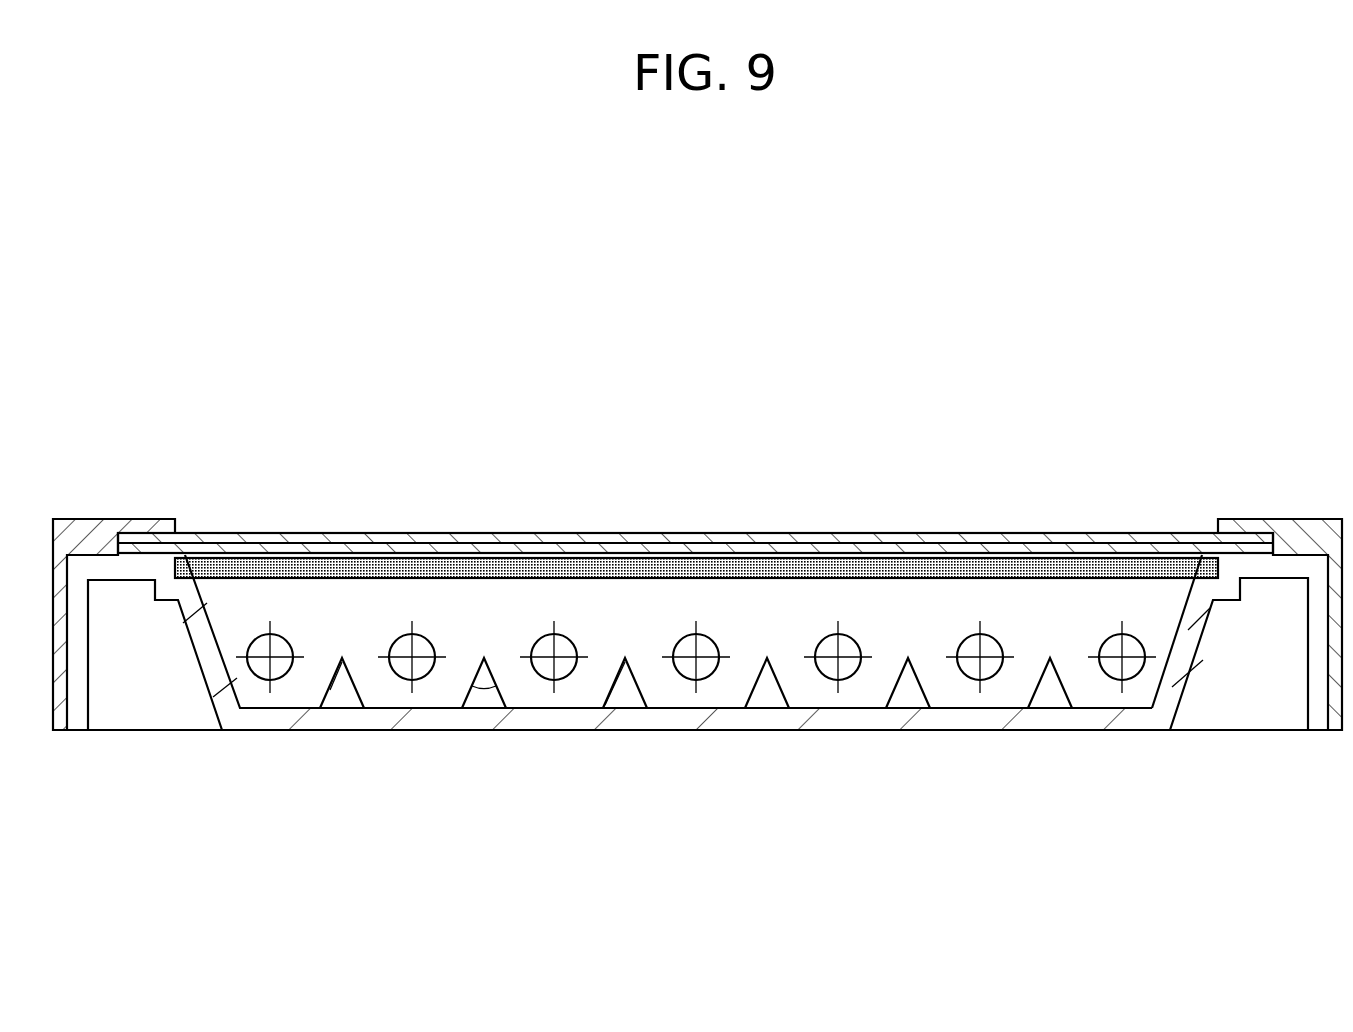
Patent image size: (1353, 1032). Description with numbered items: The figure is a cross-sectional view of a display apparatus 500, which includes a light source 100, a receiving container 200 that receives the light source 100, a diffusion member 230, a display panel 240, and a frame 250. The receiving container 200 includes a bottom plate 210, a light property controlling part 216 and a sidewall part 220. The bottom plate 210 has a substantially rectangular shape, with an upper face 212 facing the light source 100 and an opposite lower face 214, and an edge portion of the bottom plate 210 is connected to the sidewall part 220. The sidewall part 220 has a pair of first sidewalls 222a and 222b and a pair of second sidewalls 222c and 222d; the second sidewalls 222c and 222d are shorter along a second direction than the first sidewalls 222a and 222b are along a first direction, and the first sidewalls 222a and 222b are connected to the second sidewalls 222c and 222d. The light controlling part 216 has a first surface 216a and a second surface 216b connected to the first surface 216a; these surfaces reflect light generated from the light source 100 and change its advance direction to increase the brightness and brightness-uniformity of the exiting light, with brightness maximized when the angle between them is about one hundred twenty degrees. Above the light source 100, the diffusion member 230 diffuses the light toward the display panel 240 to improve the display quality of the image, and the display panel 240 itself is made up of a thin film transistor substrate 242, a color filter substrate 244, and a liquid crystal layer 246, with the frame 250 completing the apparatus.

The light source 100 is at (1105, 638).
The receiving container 200 is at (697, 681).
The bottom plate 210 is at (697, 770).
The upper face 212 is at (808, 695).
The lower face 214 is at (865, 731).
The light property controlling part 216 is at (696, 770).
The first surface 216a is at (598, 683).
The second surface 216b is at (654, 683).
The sidewall part 220 is at (698, 656).
The first sidewall 222a is at (207, 660).
The first sidewall 222b is at (1200, 644).
The second sidewall 222c is at (500, 600).
The second sidewall 222d is at (1202, 675).
The diffusion member 230 is at (637, 570).
The display panel 240 is at (695, 484).
The thin film transistor substrate 242 is at (205, 456).
The color filter substrate 244 is at (222, 535).
The liquid crystal layer 246 is at (278, 543).
The frame 250 is at (1310, 535).
The display apparatus 500 is at (724, 503).